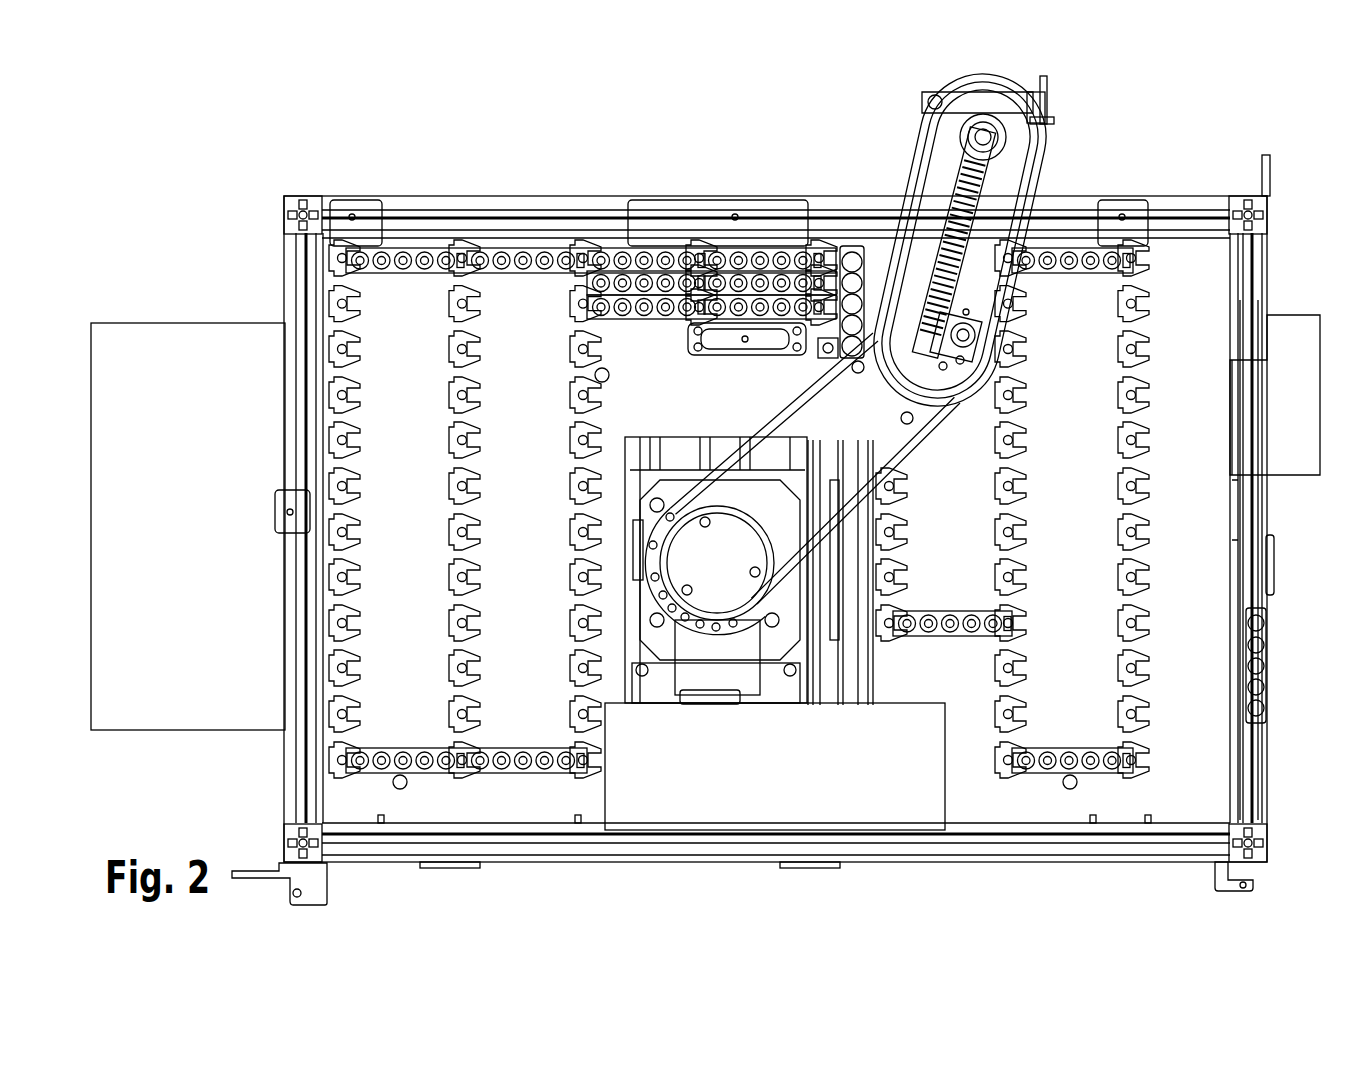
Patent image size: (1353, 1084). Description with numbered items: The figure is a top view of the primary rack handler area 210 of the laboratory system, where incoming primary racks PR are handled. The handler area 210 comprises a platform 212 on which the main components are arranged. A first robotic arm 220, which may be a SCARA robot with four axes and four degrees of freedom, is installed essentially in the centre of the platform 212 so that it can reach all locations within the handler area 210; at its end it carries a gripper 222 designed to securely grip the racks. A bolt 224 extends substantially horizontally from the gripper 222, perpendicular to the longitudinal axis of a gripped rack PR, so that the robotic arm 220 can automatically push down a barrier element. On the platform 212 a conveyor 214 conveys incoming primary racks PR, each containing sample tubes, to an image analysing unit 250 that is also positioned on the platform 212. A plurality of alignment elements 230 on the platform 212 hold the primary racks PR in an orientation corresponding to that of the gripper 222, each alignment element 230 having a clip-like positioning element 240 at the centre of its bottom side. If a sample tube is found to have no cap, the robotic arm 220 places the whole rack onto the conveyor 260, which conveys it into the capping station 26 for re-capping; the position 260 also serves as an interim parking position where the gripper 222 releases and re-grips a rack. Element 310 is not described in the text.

The primary rack handler area 210 is at (500, 180).
The platform 212 is at (1185, 245).
The conveyor 214 is at (880, 260).
The first robotic arm 220 is at (967, 238).
The gripper 222 is at (945, 108).
The bolt 224 is at (1050, 85).
The alignment elements 230 is at (462, 245).
The clip-like positioning element 240 is at (1258, 578).
The image analysing unit 250 is at (835, 805).
The conveyor / interim parking position 260 is at (731, 360).
The feed unit 310 is at (186, 318).
The capping station 26 is at (1299, 310).
The primary racks PR is at (520, 245).